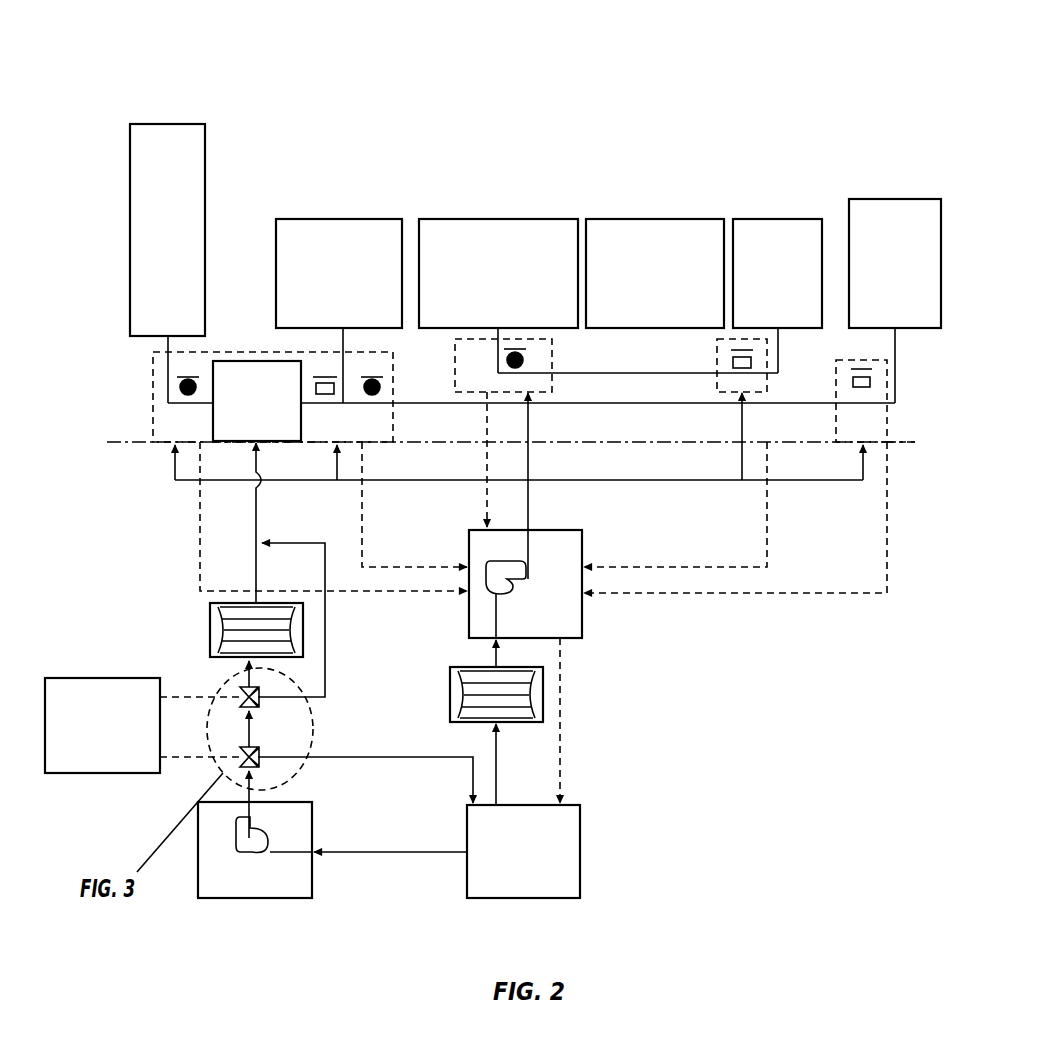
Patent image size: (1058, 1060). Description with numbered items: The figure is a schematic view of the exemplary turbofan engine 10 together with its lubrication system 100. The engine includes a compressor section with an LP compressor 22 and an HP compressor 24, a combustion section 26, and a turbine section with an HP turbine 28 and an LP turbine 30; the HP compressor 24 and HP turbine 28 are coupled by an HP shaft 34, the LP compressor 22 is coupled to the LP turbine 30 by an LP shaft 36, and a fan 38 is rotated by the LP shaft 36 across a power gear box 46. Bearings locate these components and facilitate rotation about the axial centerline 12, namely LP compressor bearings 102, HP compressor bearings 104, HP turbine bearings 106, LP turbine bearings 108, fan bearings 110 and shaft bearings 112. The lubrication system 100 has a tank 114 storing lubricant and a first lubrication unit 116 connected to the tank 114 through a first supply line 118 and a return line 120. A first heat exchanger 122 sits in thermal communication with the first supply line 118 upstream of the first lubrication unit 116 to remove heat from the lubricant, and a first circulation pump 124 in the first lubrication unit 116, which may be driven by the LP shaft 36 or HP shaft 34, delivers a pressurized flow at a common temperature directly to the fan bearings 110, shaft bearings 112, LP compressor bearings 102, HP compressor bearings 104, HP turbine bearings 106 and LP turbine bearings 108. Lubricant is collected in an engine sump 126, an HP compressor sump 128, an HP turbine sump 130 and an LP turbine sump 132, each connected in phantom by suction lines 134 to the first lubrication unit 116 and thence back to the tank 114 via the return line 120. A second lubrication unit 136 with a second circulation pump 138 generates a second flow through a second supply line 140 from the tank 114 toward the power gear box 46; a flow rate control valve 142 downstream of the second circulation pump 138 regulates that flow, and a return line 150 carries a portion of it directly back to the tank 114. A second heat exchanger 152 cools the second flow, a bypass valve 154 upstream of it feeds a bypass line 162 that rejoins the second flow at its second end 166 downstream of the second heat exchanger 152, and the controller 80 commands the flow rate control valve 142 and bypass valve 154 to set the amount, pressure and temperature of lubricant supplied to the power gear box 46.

The turbofan engine 10 is at (791, 70).
The axial centerline 12 is at (107, 440).
The LP compressor 22 is at (355, 287).
The HP compressor 24 is at (513, 287).
The combustion section 26 is at (669, 287).
The HP turbine 28 is at (792, 287).
The LP turbine 30 is at (909, 274).
The HP shaft 34 is at (603, 373).
The LP shaft 36 is at (603, 403).
The fan 38 is at (181, 244).
The power gear box 46 is at (271, 414).
The controller 80 is at (116, 739).
The lubrication system 100 is at (829, 711).
The LP compressor bearings 102 is at (374, 375).
The HP compressor bearings 104 is at (526, 360).
The HP turbine bearings 106 is at (731, 361).
The LP turbine bearings 108 is at (873, 380).
The fan bearings 110 is at (178, 386).
The shaft bearings 112 is at (327, 376).
The tank 114 is at (582, 872).
The first lubrication unit 116 is at (583, 624).
The first supply line 118 is at (530, 508).
The return line 120 is at (563, 719).
The first heat exchanger 122 is at (450, 696).
The first circulation pump 124 is at (497, 589).
The engine sump 126 is at (153, 395).
The HP compressor sump 128 is at (455, 368).
The HP turbine sump 130 is at (732, 358).
The LP turbine sump 132 is at (889, 410).
The suction lines 134 is at (200, 536).
The second lubrication unit 136 is at (258, 898).
The second circulation pump 138 is at (252, 847).
The second supply line 140 is at (262, 516).
The flow rate control valve 142 is at (238, 758).
The return line 150 is at (391, 758).
The second heat exchanger 152 is at (210, 618).
The bypass valve 154 is at (238, 697).
The bypass line 162 is at (325, 698).
The second end 166 is at (270, 530).